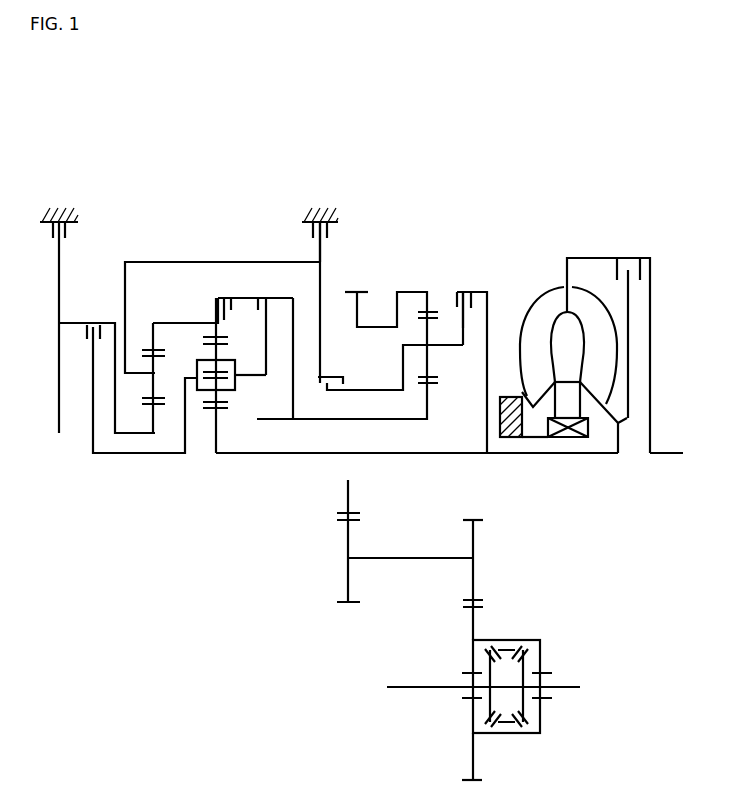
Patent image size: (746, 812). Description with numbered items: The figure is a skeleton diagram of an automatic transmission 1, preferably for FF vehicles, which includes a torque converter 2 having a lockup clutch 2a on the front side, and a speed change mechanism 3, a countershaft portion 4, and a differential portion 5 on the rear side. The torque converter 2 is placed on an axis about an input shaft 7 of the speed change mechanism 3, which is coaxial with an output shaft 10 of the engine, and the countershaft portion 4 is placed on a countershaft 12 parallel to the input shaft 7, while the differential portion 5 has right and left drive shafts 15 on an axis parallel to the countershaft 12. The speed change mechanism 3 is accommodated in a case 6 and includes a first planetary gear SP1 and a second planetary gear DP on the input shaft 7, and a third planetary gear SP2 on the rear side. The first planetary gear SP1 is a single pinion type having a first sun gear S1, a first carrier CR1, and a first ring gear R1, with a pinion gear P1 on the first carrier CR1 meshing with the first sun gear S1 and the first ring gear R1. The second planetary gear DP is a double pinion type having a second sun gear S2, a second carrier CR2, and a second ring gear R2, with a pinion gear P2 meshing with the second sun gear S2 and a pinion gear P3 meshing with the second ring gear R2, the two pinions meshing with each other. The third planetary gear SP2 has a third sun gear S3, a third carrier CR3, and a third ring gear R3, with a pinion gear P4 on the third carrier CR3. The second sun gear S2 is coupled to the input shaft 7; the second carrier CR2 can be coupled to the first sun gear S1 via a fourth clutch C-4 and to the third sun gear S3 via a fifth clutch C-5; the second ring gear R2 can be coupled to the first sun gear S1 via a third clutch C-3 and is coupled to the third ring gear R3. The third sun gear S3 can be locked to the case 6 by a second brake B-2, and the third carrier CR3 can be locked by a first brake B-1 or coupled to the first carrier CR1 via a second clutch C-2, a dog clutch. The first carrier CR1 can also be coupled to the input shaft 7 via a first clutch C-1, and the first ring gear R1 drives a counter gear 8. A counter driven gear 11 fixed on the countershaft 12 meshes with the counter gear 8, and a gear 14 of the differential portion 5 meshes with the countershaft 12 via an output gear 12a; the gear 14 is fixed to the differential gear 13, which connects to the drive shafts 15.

The automatic transmission 1 is at (482, 170).
The torque converter 2 is at (589, 246).
The lockup clutch 2a is at (628, 292).
The speed change mechanism 3 is at (268, 206).
The countershaft portion 4 is at (510, 565).
The differential portion 5 is at (542, 621).
The case 6 is at (80, 212).
The input shaft 7 is at (540, 455).
The counter gear 8 is at (357, 290).
The output shaft 10 is at (668, 456).
The counter driven gear 11 is at (347, 545).
The countershaft 12 is at (405, 557).
The output gear 12a is at (476, 540).
The differential gear 13 is at (505, 735).
The gear 14 is at (477, 625).
The drive shaft 15 is at (556, 690).
The first brake B-1 is at (316, 224).
The second brake B-2 is at (59, 310).
The first clutch C-1 is at (471, 362).
The second clutch C-2 is at (390, 378).
The third clutch C-3 is at (249, 298).
The fourth clutch C-4 is at (263, 325).
The fifth clutch C-5 is at (128, 378).
The first planetary gear SP1 is at (421, 270).
The third planetary gear SP2 is at (160, 343).
The second planetary gear DP is at (198, 346).
The first ring gear R1 is at (434, 310).
The second ring gear R2 is at (228, 342).
The third ring gear R3 is at (150, 348).
The first sun gear S1 is at (433, 385).
The second sun gear S2 is at (223, 407).
The third sun gear S3 is at (163, 407).
The pinion gear P1 is at (433, 376).
The pinion gear P2 is at (228, 403).
The pinion gear P3 is at (228, 349).
The pinion gear P4 is at (157, 357).
The first carrier CR1 is at (402, 345).
The second carrier CR2 is at (235, 378).
The third carrier CR3 is at (127, 375).